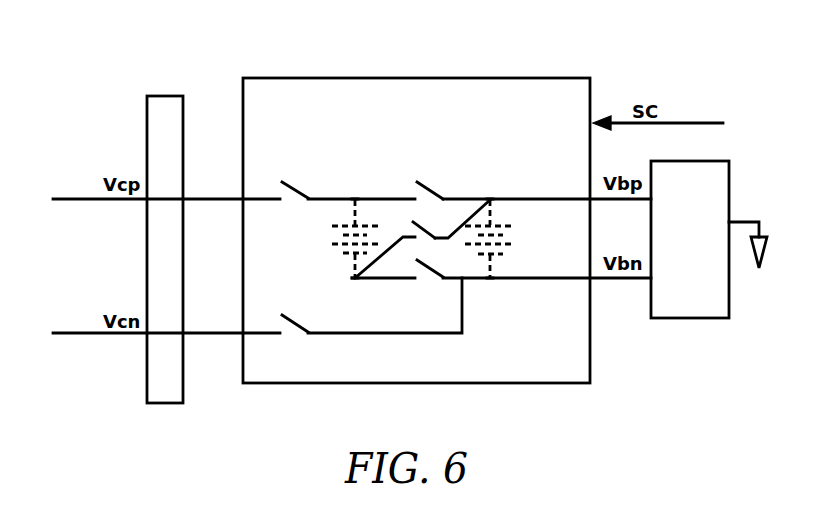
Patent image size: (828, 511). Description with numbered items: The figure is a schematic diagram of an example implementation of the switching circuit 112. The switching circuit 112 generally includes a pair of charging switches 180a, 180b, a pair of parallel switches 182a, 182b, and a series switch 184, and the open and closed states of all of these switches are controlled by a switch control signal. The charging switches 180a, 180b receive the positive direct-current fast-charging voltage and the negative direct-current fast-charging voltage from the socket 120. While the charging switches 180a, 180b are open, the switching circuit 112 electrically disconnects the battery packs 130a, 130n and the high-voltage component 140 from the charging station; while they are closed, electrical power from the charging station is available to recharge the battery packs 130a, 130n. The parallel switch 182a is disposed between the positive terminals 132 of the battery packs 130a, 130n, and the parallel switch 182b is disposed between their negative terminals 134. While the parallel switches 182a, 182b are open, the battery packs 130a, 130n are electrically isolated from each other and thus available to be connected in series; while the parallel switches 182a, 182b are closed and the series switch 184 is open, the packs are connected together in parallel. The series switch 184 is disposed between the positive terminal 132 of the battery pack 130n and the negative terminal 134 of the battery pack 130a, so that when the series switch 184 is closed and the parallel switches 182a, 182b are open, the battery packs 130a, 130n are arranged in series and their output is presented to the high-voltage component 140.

The switching circuit 112 is at (317, 77).
The socket 120 is at (165, 96).
The battery pack 130a is at (340, 236).
The battery pack 130n is at (506, 234).
The positive terminal 132 is at (352, 202).
The negative terminal 134 is at (354, 282).
The high-voltage component 140 is at (729, 187).
The charging switch 180a is at (299, 189).
The charging switch 180b is at (299, 322).
The parallel switch 182a is at (441, 197).
The parallel switch 182b is at (431, 272).
The series switch 184 is at (428, 224).